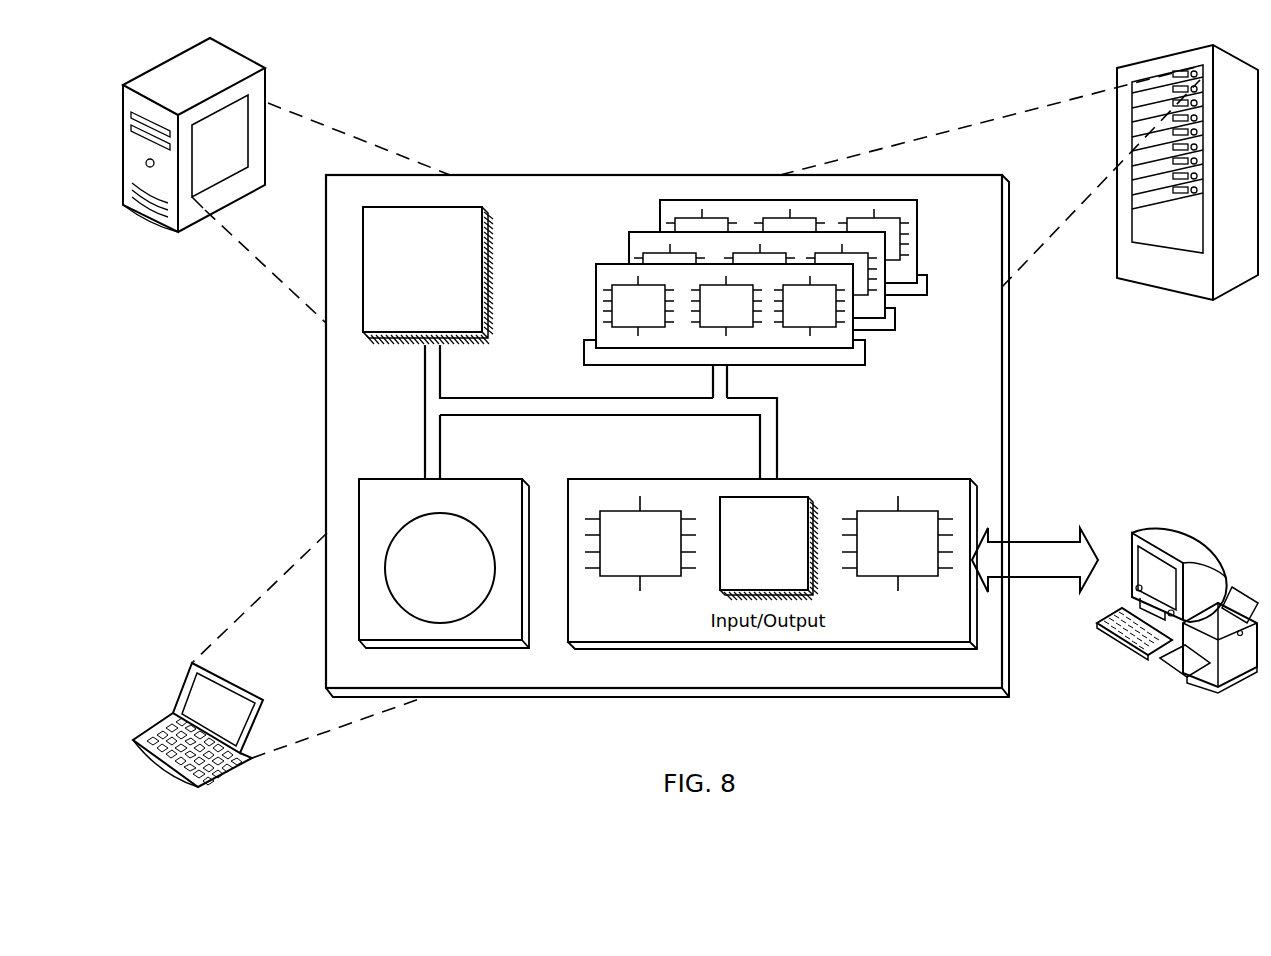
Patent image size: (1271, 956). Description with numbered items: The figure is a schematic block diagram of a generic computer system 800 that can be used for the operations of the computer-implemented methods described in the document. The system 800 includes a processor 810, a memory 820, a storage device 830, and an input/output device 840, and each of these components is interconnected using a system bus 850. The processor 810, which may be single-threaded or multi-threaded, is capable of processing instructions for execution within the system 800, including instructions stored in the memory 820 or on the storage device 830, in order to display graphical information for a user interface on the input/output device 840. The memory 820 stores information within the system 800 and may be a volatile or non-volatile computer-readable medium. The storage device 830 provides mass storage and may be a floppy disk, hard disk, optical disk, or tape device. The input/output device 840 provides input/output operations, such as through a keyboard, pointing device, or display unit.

The computer system 800 is at (503, 60).
The processor 810 is at (428, 275).
The memory 820 is at (922, 324).
The storage device 830 is at (444, 563).
The input/output device 840 is at (1130, 532).
The system bus 850 is at (597, 415).